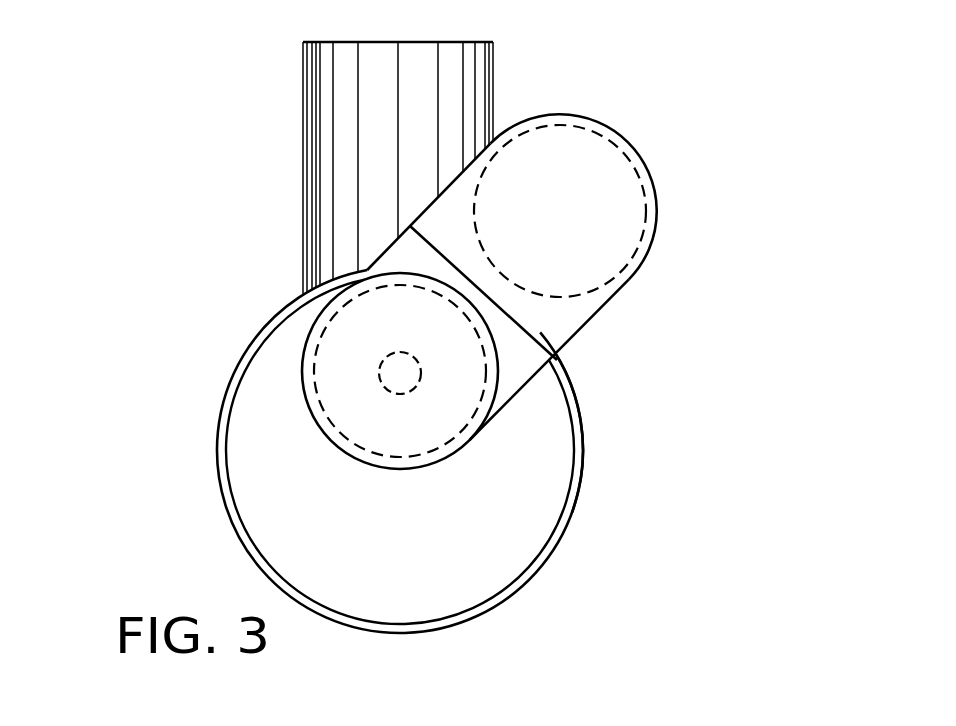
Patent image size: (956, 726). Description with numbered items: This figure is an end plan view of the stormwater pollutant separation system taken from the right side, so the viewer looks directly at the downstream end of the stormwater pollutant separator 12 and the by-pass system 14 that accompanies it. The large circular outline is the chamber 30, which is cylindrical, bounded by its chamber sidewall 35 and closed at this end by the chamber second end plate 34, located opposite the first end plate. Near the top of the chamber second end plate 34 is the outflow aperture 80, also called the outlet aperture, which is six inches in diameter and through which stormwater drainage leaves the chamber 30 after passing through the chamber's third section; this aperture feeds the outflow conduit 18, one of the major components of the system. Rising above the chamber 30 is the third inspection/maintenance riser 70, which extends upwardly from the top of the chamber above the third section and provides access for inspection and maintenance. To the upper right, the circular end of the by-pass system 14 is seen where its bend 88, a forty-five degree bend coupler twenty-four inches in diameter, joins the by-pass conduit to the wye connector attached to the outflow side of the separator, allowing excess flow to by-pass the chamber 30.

The third inspection/maintenance riser 70 is at (510, 75).
The by-pass system 14 is at (680, 178).
The stormwater pollutant separator 12 is at (638, 398).
The bend 88 is at (495, 288).
The outflow conduit 18 is at (335, 447).
The outflow aperture 80 is at (422, 372).
The chamber 30 is at (577, 535).
The chamber sidewall 35 is at (577, 492).
The chamber second end plate 34 is at (550, 445).